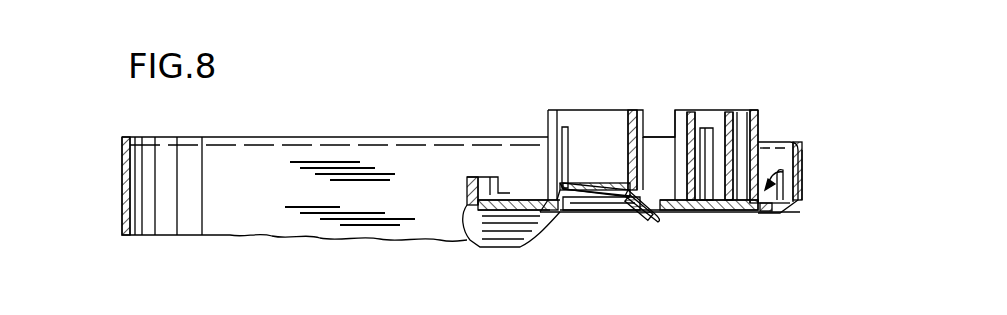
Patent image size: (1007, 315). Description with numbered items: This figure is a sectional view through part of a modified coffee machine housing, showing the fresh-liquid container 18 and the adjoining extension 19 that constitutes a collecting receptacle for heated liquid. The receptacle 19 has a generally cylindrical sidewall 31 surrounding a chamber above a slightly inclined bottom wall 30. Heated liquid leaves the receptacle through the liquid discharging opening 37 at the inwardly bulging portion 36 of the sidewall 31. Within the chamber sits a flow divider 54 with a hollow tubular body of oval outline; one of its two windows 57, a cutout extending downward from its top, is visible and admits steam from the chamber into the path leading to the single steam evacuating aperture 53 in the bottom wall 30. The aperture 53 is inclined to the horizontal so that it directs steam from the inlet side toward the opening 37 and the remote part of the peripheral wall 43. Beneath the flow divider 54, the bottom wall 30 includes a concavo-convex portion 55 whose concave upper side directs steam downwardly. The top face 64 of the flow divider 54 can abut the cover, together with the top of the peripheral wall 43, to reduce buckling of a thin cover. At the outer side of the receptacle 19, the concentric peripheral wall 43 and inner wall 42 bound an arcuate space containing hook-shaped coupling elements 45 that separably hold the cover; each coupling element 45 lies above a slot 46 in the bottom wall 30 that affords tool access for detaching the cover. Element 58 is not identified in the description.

The container 18 is at (122, 200).
The extension 19 is at (805, 172).
The bottom wall 30 is at (592, 210).
The cylindrical sidewall 31 is at (716, 112).
The inwardly bulging portion 36 is at (736, 112).
The liquid discharging opening 37 is at (718, 212).
The inner wall 42 is at (762, 120).
The peripheral wall 43 is at (805, 153).
The hook-shaped coupling element 45 is at (800, 210).
The slot 46 is at (772, 208).
The steam evacuating aperture 53 is at (672, 218).
The flow divider 54 is at (625, 135).
The concavo-convex portion 55 is at (645, 216).
The window 57 is at (656, 135).
The inclined lever 58 is at (688, 215).
The top face 64 is at (631, 110).